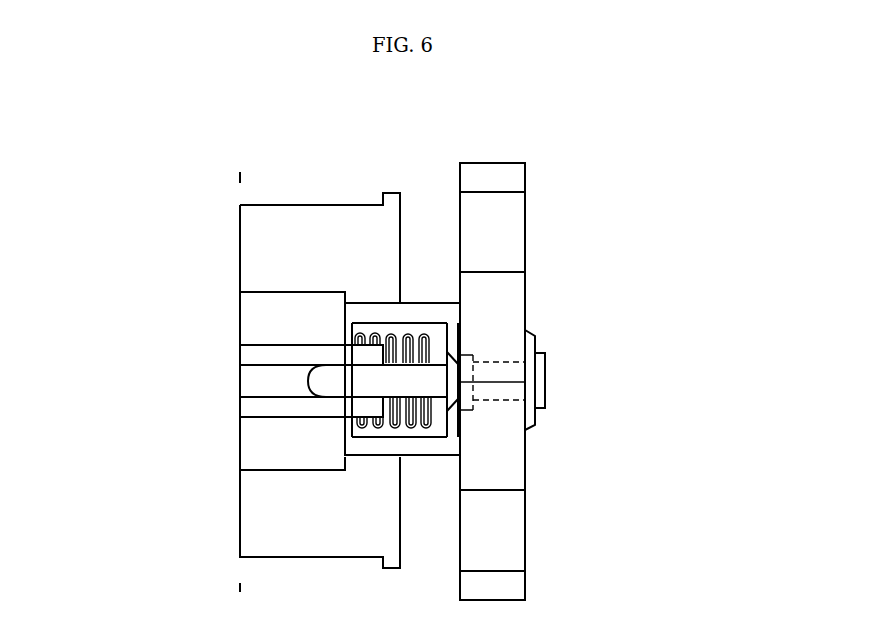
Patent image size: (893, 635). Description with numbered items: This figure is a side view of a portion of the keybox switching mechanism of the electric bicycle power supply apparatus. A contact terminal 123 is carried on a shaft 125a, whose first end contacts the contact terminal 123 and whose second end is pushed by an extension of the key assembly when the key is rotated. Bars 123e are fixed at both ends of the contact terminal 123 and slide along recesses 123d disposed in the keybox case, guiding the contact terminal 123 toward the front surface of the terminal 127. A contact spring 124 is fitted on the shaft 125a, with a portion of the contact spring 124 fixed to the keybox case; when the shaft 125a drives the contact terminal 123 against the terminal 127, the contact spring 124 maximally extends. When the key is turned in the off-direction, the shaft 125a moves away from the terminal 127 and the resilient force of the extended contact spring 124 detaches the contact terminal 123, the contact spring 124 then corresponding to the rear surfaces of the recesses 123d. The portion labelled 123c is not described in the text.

The contact terminal 123 is at (442, 340).
The spring housing 123c is at (432, 312).
The recesses 123d is at (258, 379).
The bars 123e is at (341, 381).
The contact spring 124 is at (393, 350).
The shaft 125a is at (423, 407).
The terminal 127 is at (537, 368).